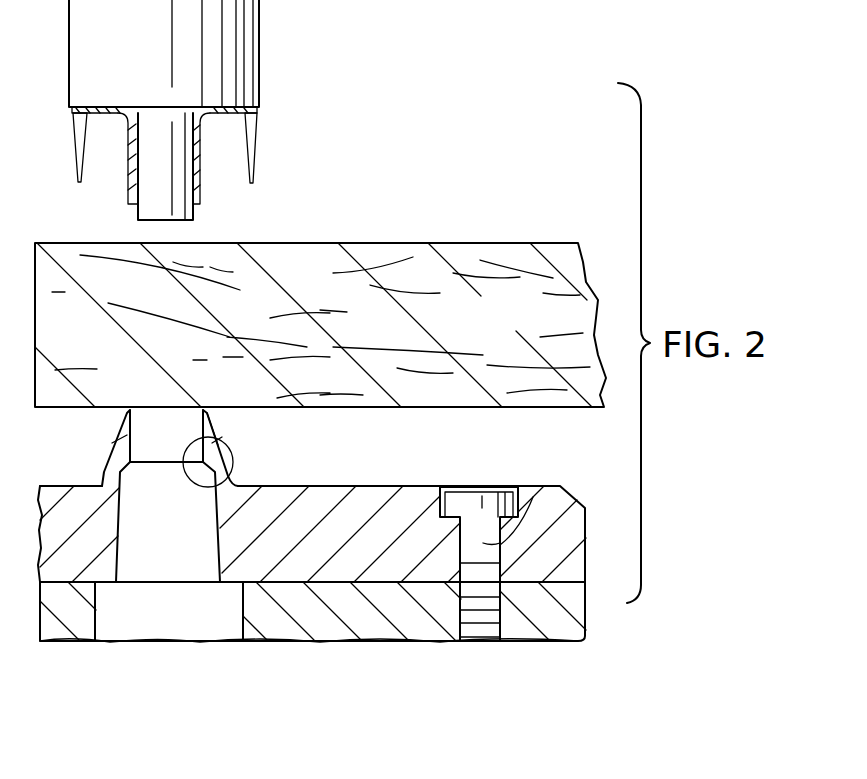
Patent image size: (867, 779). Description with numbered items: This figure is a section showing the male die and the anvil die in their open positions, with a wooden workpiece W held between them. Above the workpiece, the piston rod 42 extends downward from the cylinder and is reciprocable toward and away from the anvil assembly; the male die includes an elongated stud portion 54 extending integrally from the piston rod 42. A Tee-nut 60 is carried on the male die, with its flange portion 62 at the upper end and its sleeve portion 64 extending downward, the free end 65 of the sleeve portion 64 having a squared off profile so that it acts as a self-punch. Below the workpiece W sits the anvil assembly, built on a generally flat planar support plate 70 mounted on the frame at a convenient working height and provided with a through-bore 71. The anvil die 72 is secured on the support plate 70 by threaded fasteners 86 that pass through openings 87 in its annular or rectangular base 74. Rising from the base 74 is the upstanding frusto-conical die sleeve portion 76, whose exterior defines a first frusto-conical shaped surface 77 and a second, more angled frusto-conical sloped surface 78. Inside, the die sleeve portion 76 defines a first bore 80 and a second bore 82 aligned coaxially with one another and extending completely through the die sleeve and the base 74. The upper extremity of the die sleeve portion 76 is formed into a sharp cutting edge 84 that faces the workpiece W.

The piston rod 42 is at (242, 13).
The elongated stud portion 54 is at (197, 207).
The Tee-nut 60 is at (268, 160).
The flange portion 62 is at (222, 117).
The sleeve portion 64 is at (202, 175).
The free end 65 is at (130, 205).
The support plate 70 is at (587, 622).
The through-bore 71 is at (238, 620).
The anvil die 72 is at (390, 489).
The base 74 is at (366, 508).
The die sleeve portion 76 is at (120, 456).
The first frusto-conical shaped surface 77 is at (216, 457).
The second frusto-conical sloped surface 78 is at (122, 416).
The first bore 80 is at (233, 485).
The second bore 82 is at (215, 545).
The cutting edge 84 is at (124, 420).
The threaded fasteners 86 is at (567, 490).
The openings 87 is at (458, 533).
The wooden workpiece W is at (506, 331).